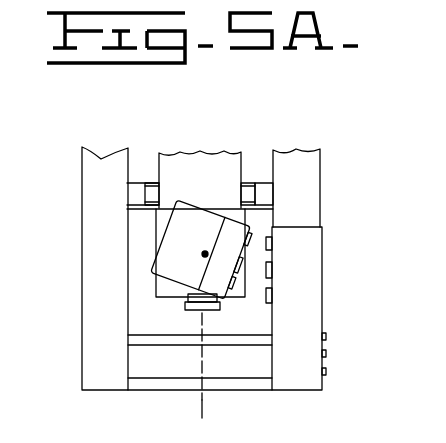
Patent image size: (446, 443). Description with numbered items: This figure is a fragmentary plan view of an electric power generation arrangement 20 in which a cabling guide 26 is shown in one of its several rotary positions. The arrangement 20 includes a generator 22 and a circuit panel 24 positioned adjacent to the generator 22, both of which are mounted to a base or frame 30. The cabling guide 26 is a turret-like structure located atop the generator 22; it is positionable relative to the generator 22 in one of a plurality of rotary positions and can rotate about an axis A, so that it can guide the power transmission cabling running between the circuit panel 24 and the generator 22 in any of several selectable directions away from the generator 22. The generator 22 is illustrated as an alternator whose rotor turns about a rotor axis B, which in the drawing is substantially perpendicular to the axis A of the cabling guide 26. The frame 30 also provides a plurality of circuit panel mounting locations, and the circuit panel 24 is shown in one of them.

The electric power generation arrangement 20 is at (336, 186).
The generator 22 is at (192, 165).
The circuit panel 24 is at (302, 343).
The cabling guide 26 is at (237, 250).
The frame 30 is at (95, 308).
The axis A is at (203, 254).
The rotor axis B is at (200, 402).